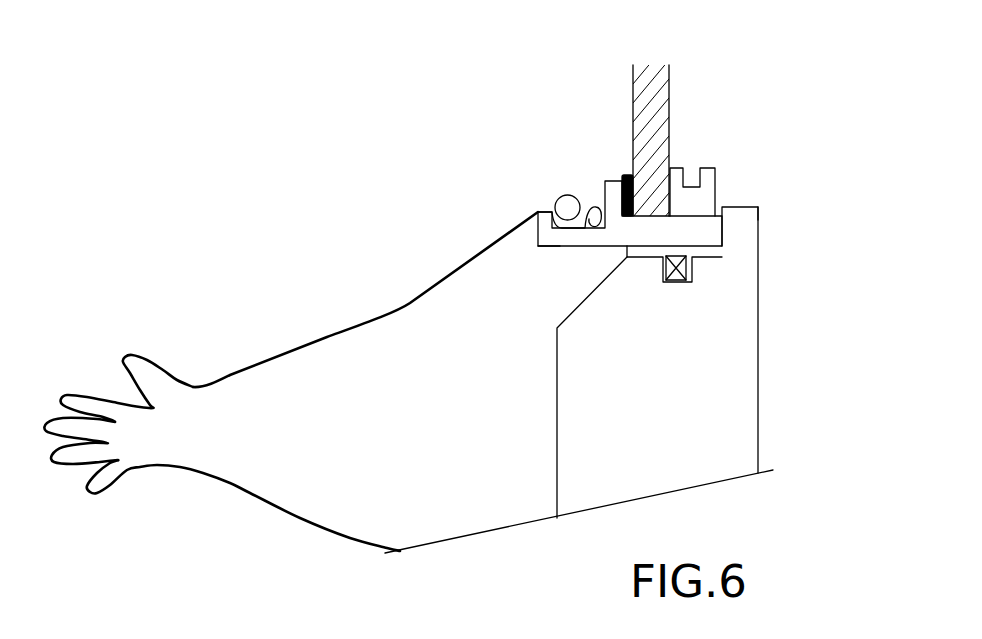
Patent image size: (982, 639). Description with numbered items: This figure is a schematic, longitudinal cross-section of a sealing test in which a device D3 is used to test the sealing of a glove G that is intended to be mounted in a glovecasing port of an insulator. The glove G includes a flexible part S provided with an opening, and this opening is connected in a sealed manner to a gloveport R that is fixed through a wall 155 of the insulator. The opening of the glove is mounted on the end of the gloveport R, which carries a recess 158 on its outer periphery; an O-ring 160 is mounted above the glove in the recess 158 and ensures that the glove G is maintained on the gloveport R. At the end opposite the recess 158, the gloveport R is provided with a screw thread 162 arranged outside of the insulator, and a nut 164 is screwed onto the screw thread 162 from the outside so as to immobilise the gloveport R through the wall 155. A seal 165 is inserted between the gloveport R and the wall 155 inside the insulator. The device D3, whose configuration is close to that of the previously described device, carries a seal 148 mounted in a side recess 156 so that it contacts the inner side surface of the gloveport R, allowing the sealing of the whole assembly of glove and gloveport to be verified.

The glove G is at (164, 306).
The flexible part S is at (367, 318).
The gloveport R is at (703, 228).
The recess 158 is at (560, 244).
The O-ring 160 is at (567, 196).
The seal 165 is at (628, 175).
The wall 155 is at (663, 93).
The nut 164 is at (708, 180).
The screw thread 162 is at (702, 215).
The seal 148 is at (693, 263).
The side recess 156 is at (660, 283).
The device D3 is at (732, 417).